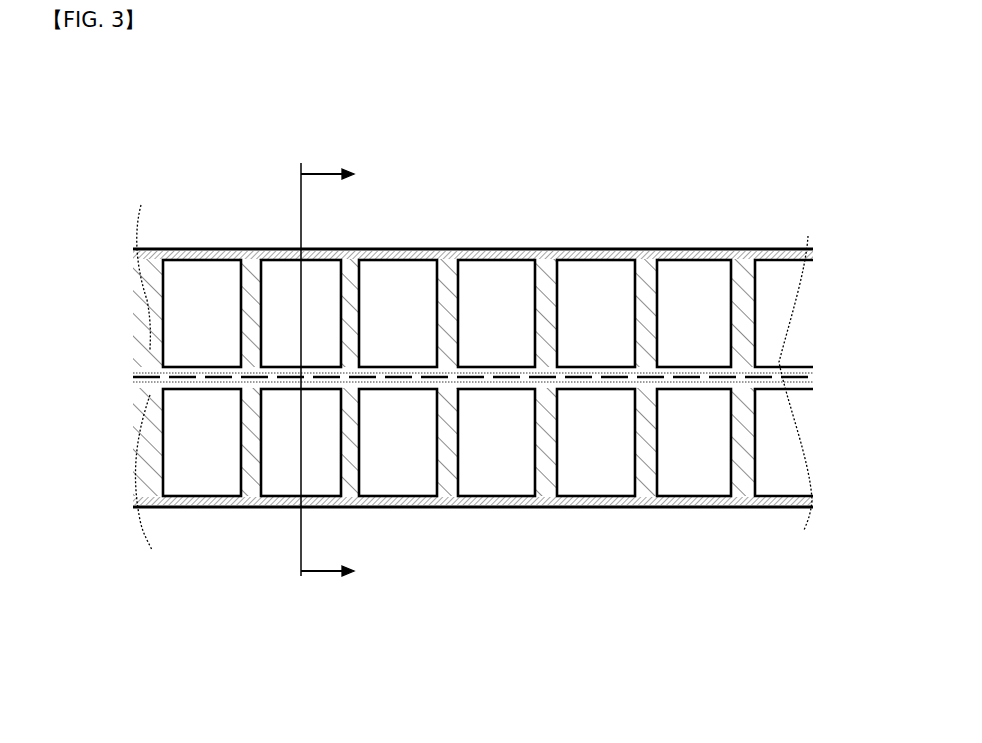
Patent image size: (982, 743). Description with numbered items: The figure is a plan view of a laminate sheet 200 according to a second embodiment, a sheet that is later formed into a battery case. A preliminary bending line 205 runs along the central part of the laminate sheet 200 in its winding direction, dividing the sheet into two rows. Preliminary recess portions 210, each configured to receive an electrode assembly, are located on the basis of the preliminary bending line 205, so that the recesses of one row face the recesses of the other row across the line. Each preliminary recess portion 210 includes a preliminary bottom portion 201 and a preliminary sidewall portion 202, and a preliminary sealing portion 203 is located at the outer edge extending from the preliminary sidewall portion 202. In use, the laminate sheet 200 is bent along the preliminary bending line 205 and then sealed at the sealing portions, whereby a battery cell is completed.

The laminate sheet 200 is at (189, 182).
The preliminary bottom portion 201 is at (722, 272).
The preliminary sidewall portion 202 is at (687, 256).
The preliminary sealing portion 203 is at (655, 252).
The preliminary bending line 205 is at (772, 367).
The preliminary recess portion 210 is at (744, 153).